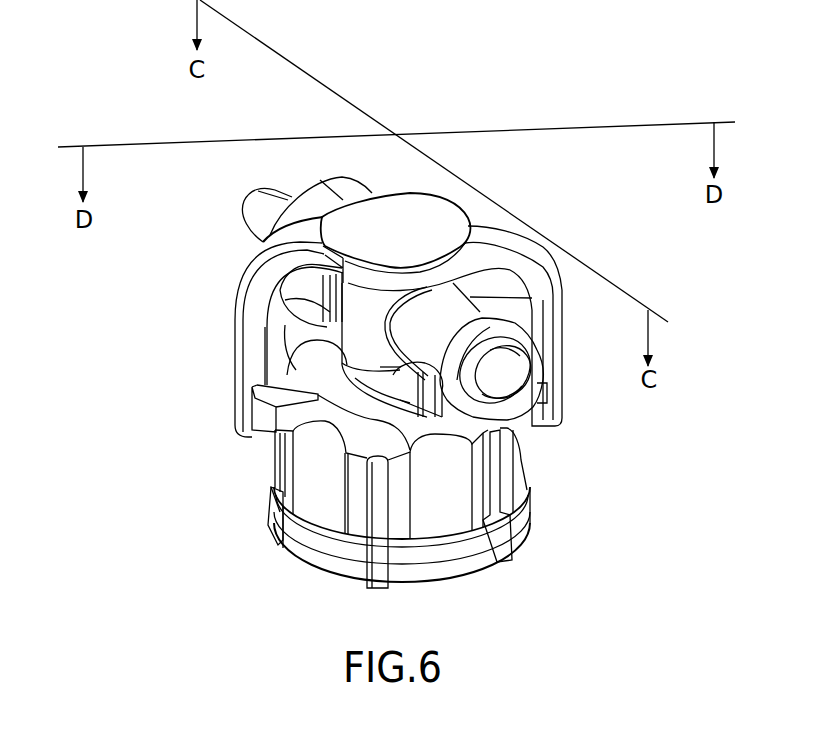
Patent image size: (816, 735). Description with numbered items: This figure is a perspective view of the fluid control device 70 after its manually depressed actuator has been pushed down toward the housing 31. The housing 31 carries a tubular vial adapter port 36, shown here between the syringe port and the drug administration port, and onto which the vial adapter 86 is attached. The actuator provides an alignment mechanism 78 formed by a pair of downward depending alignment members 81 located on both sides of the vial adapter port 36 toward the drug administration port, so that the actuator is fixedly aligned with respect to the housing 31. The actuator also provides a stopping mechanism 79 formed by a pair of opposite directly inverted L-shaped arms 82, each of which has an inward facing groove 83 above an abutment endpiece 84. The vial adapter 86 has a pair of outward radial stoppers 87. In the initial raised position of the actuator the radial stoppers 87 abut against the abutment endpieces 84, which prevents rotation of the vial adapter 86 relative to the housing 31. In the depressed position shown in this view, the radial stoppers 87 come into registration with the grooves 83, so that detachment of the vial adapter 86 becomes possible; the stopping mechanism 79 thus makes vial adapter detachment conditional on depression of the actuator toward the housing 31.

The fluid control device 70 is at (498, 117).
The alignment mechanism 78 is at (495, 180).
The stopping mechanism 79 is at (152, 318).
The alignment member 81 is at (270, 264).
The vial adapter port 36 is at (363, 330).
The housing 31 is at (447, 313).
The inverted L-shaped arm 82 is at (253, 350).
The inward facing groove 83 is at (250, 387).
The abutment endpiece 84 is at (247, 437).
The outward radial stopper 87 is at (267, 427).
The vial adapter 86 is at (535, 567).